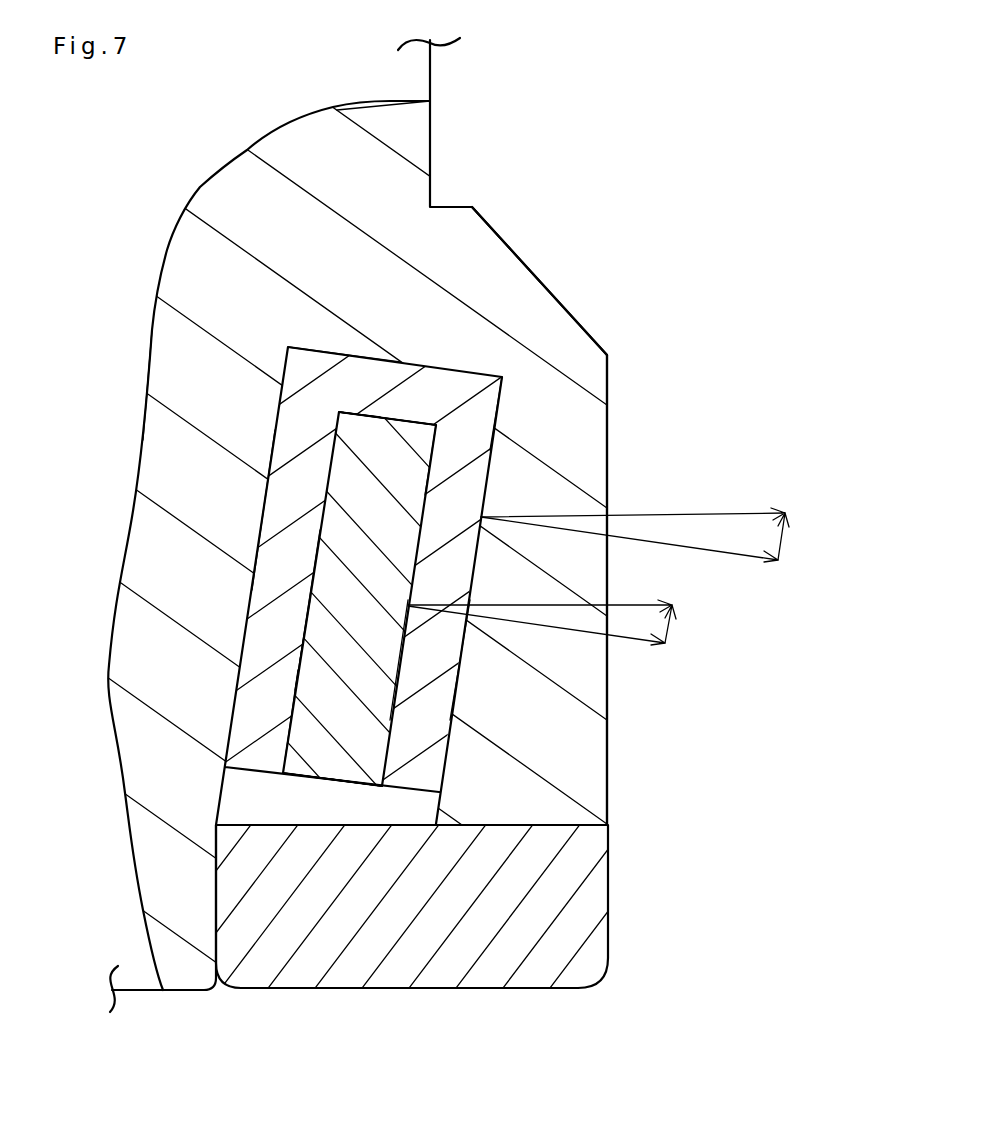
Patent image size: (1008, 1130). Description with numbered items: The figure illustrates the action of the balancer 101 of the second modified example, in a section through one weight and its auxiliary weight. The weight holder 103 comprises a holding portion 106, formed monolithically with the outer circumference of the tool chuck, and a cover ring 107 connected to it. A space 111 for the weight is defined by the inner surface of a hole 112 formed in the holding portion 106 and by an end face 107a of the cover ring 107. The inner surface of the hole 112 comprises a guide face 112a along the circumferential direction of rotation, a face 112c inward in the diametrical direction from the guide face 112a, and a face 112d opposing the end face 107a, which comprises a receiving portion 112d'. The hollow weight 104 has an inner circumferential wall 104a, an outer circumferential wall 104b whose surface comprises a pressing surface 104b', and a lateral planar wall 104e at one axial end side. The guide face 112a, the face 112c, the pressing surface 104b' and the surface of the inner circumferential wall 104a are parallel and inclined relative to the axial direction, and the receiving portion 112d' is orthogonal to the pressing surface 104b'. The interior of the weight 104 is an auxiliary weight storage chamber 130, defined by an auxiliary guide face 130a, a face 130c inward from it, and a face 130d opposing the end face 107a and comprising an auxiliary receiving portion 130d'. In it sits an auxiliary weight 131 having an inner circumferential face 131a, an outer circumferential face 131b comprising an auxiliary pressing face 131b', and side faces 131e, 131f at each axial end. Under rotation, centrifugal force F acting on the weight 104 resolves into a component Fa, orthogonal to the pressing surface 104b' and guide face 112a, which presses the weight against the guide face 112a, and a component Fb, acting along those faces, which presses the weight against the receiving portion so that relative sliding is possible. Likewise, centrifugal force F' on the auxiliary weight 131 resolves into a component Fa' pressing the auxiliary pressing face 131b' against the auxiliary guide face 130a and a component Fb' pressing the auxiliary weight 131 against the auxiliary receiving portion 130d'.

The balancer 101 is at (570, 303).
The weight holder 103 is at (606, 372).
The weight 104 is at (467, 492).
The inner circumferential wall 104a is at (272, 588).
The outer circumferential wall 104b is at (572, 661).
The pressing surface 104b' is at (592, 413).
The lateral planar wall 104e is at (362, 370).
The holding portion 106 is at (530, 272).
The cover ring 107 is at (610, 897).
The end face 107a is at (263, 827).
The space 111 is at (331, 805).
The hole 112 is at (446, 743).
The guide face 112a is at (474, 547).
The face 112c is at (270, 415).
The face 112d is at (383, 235).
The receiving portion 112d' is at (578, 298).
The auxiliary weight storage chamber 130 is at (289, 754).
The auxiliary guide face 130a is at (382, 757).
The face 130c is at (297, 673).
The face 130d is at (218, 440).
The auxiliary receiving portion 130d' is at (517, 388).
The auxiliary weight 131 is at (335, 543).
The inner circumferential face 131a is at (305, 627).
The outer circumferential face 131b is at (547, 679).
The auxiliary pressing face 131b' is at (570, 460).
The side face 131e is at (434, 425).
The side face 131f is at (374, 790).
The centrifugal force F is at (633, 491).
The component of centrifugal force Fa is at (634, 564).
The component of centrifugal force Fb is at (804, 536).
The centrifugal force F' is at (568, 600).
The component of centrifugal force Fa' is at (564, 647).
The component of centrifugal force Fb' is at (705, 629).